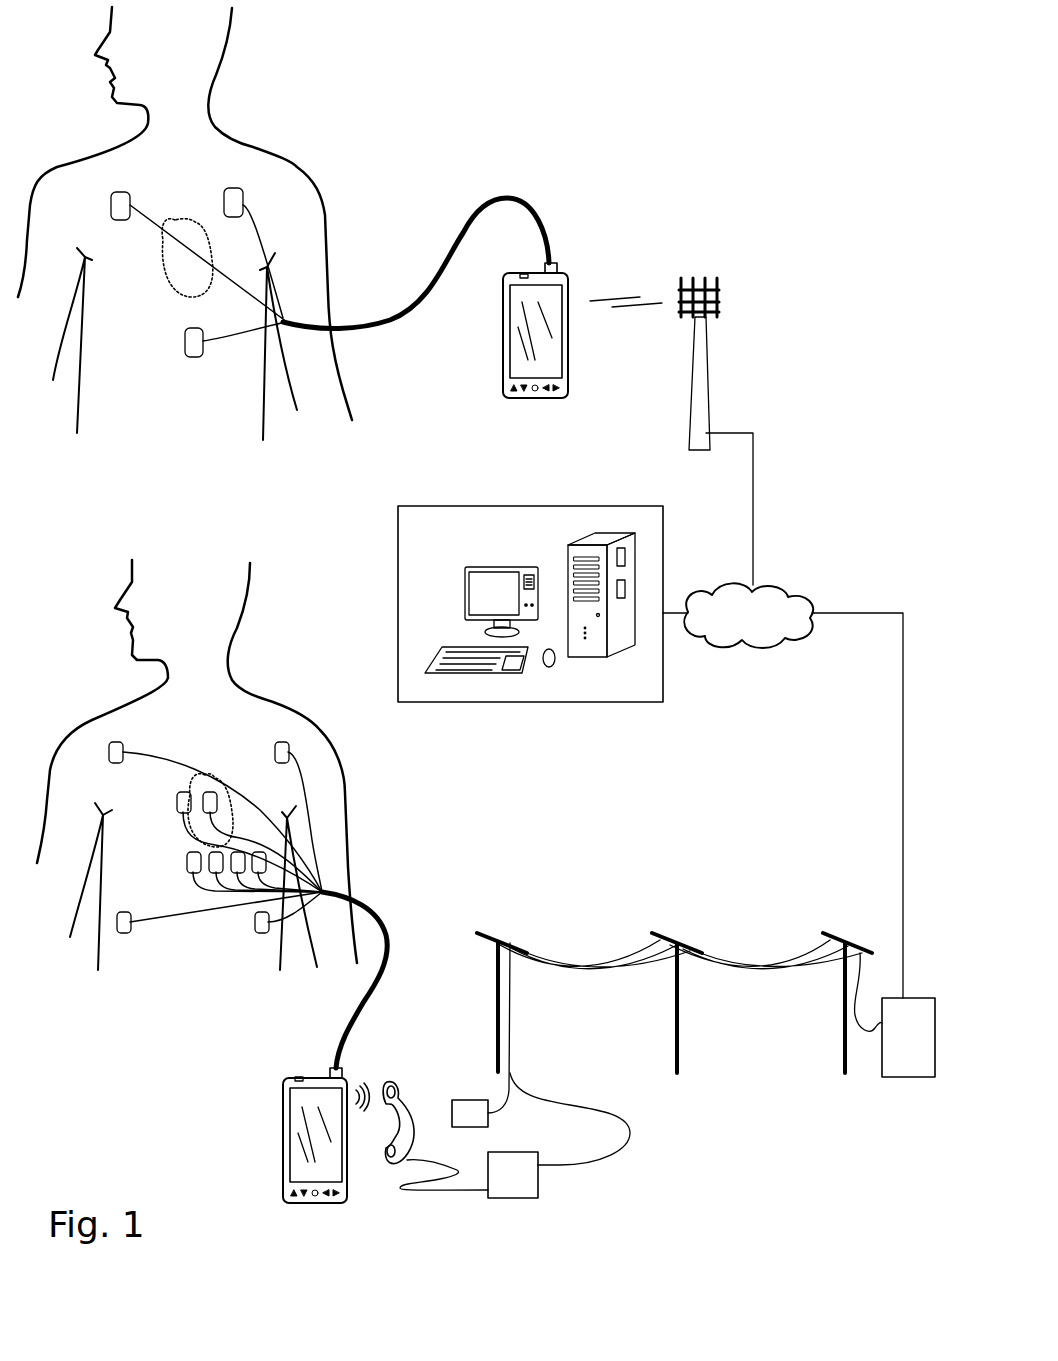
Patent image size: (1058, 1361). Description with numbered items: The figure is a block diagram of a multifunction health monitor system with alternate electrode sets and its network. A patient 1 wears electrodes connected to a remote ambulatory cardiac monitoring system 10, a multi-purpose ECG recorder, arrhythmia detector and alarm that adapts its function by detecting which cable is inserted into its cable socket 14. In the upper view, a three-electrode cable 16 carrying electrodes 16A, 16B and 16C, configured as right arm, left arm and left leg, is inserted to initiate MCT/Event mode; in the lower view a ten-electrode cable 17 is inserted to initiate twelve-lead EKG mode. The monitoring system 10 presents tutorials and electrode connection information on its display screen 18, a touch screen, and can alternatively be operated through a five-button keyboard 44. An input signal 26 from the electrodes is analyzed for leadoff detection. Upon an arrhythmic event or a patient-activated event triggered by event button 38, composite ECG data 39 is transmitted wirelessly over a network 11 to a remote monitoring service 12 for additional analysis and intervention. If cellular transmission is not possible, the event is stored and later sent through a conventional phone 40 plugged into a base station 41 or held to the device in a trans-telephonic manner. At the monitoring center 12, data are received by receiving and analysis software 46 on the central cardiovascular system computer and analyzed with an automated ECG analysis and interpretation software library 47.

The patient 1 is at (266, 23).
The remote ambulatory cardiac monitoring system 10 is at (490, 366).
The network 11 is at (800, 564).
The remote monitoring service 12 is at (402, 536).
The cable socket 14 is at (557, 268).
The three-electrode cable 16 is at (478, 208).
The electrode 16A is at (224, 192).
The electrode 16B is at (120, 220).
The electrode 16C is at (194, 357).
The ten-electrode cable 17 is at (388, 926).
The display screen 18 is at (552, 364).
The input signal 26 is at (524, 273).
The event button 38 is at (298, 1077).
The composite ECG data 39 is at (630, 302).
The conventional phone 40 is at (537, 1180).
The base station 41 is at (475, 1105).
The 5-button keyboard 44 is at (576, 387).
The receiving and analysis software 46 is at (625, 553).
The automated ECG analysis and interpretation software library 47 is at (625, 587).